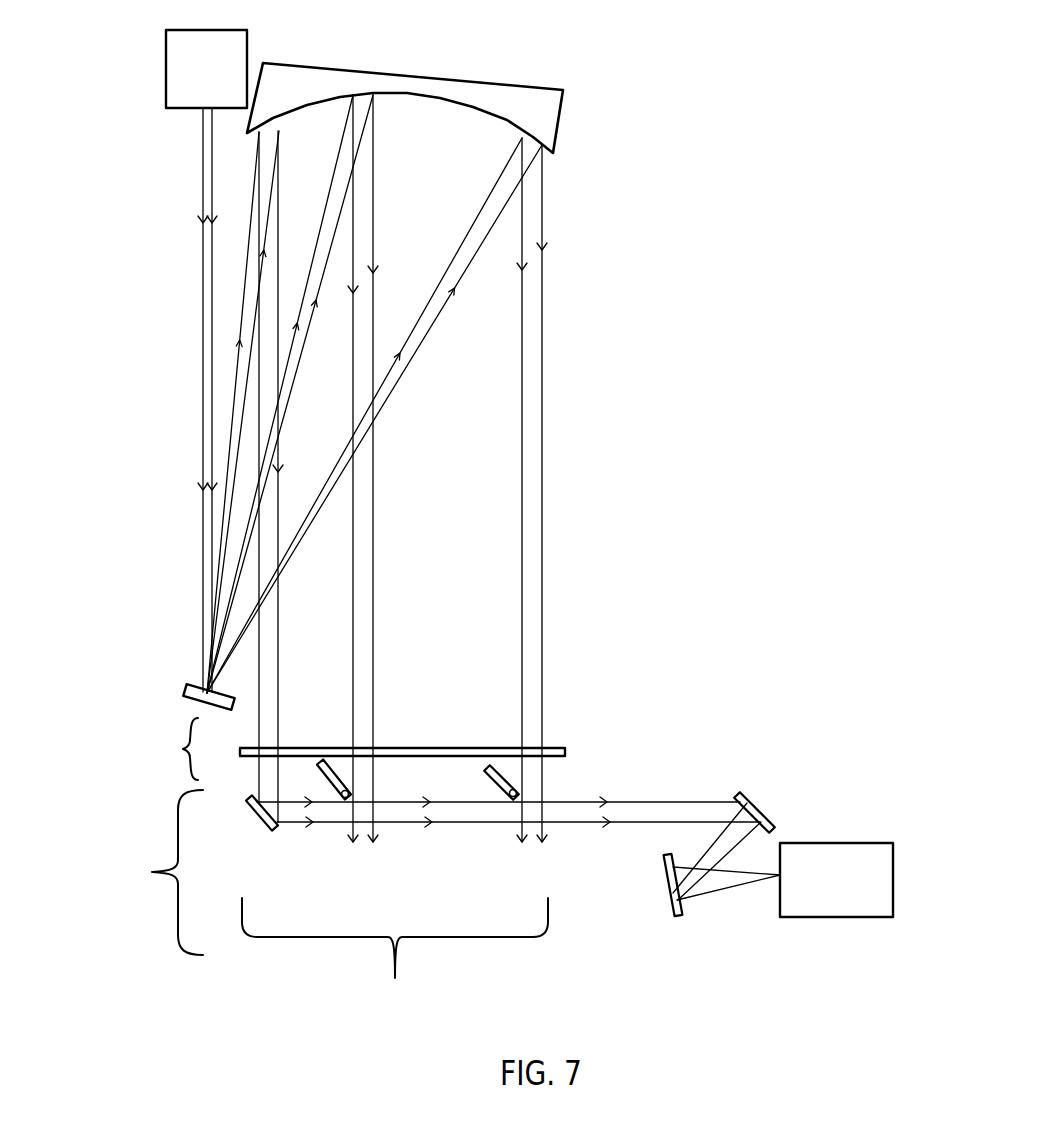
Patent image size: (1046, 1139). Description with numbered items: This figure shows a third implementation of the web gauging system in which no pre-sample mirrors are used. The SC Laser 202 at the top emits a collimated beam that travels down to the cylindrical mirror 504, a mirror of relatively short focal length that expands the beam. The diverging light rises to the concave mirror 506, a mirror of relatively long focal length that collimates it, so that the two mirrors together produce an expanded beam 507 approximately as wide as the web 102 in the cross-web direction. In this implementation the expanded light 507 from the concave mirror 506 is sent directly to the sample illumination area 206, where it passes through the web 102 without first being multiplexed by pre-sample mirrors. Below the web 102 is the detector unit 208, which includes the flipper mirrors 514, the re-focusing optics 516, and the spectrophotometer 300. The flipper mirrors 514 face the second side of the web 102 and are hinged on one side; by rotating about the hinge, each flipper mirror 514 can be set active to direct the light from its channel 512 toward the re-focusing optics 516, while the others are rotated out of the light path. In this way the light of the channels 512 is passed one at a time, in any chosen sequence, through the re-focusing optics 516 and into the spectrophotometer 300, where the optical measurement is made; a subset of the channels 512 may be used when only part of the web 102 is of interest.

The SC Laser 202 is at (165, 42).
The concave mirror 506 is at (548, 85).
The expanded beam 507 is at (543, 362).
The cylindrical mirror 504 is at (183, 698).
The sample illumination area 206 is at (155, 749).
The web 102 is at (565, 752).
The detector unit 208 is at (419, 872).
The flipper mirrors 514 is at (260, 817).
The channels 512 is at (395, 898).
The re-focusing optics 516 is at (753, 800).
The spectrophotometer 300 is at (847, 840).